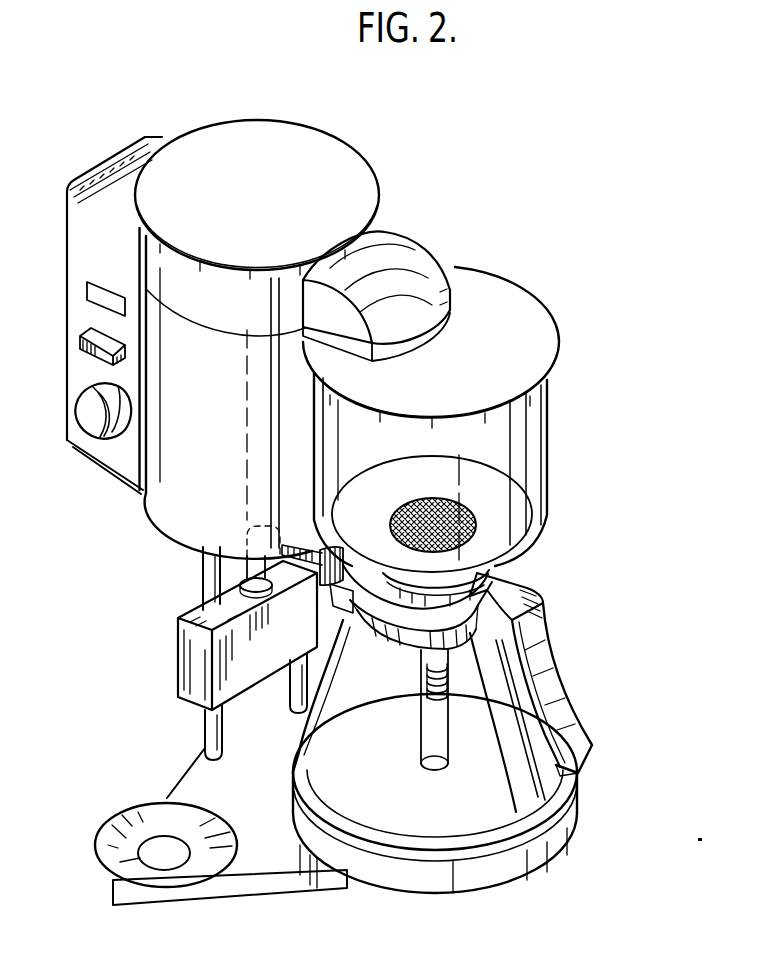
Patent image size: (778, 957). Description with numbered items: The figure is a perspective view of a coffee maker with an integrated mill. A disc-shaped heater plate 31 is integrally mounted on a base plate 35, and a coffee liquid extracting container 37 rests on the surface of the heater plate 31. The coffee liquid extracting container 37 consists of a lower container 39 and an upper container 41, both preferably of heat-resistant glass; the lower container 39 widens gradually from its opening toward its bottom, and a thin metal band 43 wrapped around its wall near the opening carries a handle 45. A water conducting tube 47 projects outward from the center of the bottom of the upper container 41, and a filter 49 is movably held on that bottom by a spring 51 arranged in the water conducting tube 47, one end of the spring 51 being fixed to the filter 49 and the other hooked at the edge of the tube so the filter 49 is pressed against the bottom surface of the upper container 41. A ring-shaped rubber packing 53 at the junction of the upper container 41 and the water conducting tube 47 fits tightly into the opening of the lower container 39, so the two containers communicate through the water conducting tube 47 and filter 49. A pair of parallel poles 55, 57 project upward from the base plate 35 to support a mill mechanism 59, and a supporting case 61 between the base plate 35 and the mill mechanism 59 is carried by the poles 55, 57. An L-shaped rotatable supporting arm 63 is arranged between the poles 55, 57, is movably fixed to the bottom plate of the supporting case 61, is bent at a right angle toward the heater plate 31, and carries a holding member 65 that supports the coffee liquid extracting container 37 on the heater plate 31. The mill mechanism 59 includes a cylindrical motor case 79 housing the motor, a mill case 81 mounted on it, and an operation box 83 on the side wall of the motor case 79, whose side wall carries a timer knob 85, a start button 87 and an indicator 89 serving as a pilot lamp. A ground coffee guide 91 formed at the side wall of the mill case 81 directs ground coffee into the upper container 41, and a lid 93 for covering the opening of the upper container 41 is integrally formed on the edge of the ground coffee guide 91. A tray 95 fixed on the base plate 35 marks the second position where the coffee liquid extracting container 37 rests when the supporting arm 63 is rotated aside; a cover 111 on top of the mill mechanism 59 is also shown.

The heater plate 31 is at (435, 825).
The base plate 35 is at (193, 822).
The coffee liquid extracting container 37 is at (460, 525).
The lower container 39 is at (461, 832).
The upper container 41 is at (548, 452).
The thin metal band 43 is at (412, 736).
The handle 45 is at (549, 683).
The water conducting tube 47 is at (452, 775).
The filter 49 is at (430, 513).
The spring 51 is at (449, 686).
The rubber packing 53 is at (500, 585).
The pole 55 is at (225, 745).
The pole 57 is at (369, 721).
The mill mechanism 59 is at (265, 317).
The supporting case 61 is at (180, 618).
The supporting arm 63 is at (316, 549).
The holding member 65 is at (358, 603).
The motor case 79 is at (158, 487).
The mill case 81 is at (145, 252).
The operation box 83 is at (66, 214).
The timer knob 85 is at (78, 410).
The start button 87 is at (80, 343).
The indicator 89 is at (88, 290).
The ground coffee guide 91 is at (398, 257).
The lid 93 is at (514, 300).
The tray 95 is at (105, 850).
The reservoir lid 111 is at (268, 146).